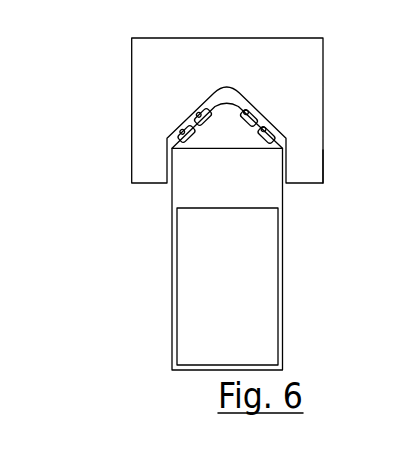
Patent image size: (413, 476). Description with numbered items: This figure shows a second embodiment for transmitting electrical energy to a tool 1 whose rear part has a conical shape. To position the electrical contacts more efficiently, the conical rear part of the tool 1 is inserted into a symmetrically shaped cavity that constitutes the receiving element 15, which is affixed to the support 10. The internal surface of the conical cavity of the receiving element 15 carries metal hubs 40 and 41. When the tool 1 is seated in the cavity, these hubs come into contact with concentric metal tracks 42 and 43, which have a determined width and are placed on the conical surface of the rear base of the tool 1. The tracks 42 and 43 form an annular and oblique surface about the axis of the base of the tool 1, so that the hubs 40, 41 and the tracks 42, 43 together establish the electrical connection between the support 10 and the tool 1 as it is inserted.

The tool 1 is at (283, 302).
The support 10 is at (323, 52).
The receiving element 15 is at (323, 163).
The metal hub 40 is at (198, 112).
The metal hub 41 is at (182, 132).
The concentric metal track 42 is at (252, 117).
The concentric metal track 43 is at (272, 135).